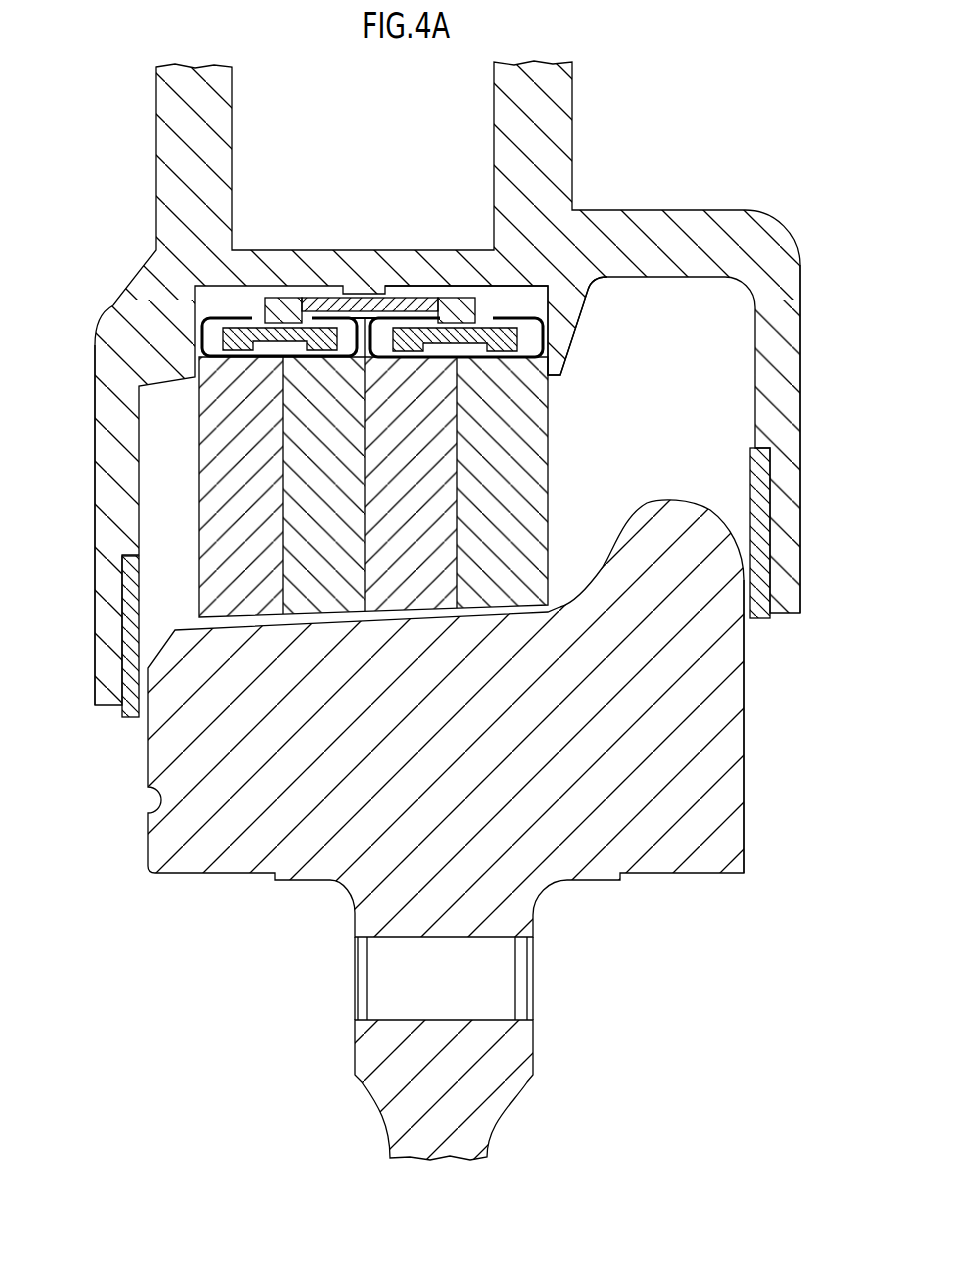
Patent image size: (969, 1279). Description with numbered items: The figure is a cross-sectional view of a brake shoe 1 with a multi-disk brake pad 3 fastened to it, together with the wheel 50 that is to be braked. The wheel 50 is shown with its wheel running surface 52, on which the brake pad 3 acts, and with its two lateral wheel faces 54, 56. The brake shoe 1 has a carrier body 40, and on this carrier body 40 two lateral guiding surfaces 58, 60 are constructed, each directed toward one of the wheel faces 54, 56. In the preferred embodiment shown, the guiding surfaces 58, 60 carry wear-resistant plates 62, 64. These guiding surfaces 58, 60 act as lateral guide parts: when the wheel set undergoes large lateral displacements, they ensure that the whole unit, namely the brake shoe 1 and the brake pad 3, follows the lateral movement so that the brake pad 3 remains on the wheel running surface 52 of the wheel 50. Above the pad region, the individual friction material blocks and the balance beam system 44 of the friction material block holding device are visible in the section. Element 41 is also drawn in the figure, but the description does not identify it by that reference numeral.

The brake shoe 1 is at (373, 222).
The brake pad 3 is at (582, 476).
The carrier body 40 is at (528, 170).
The circuit board with coils 41 is at (248, 297).
The balance beam system 44 is at (520, 305).
The wheel 50 is at (308, 798).
The wheel running surface 52 is at (213, 627).
The wheel face 54 is at (148, 746).
The wheel face 56 is at (745, 733).
The guiding surface 58 is at (785, 398).
The guiding surface 60 is at (110, 494).
The wear-resistant plate 62 is at (130, 665).
The wear-resistant plate 64 is at (762, 612).